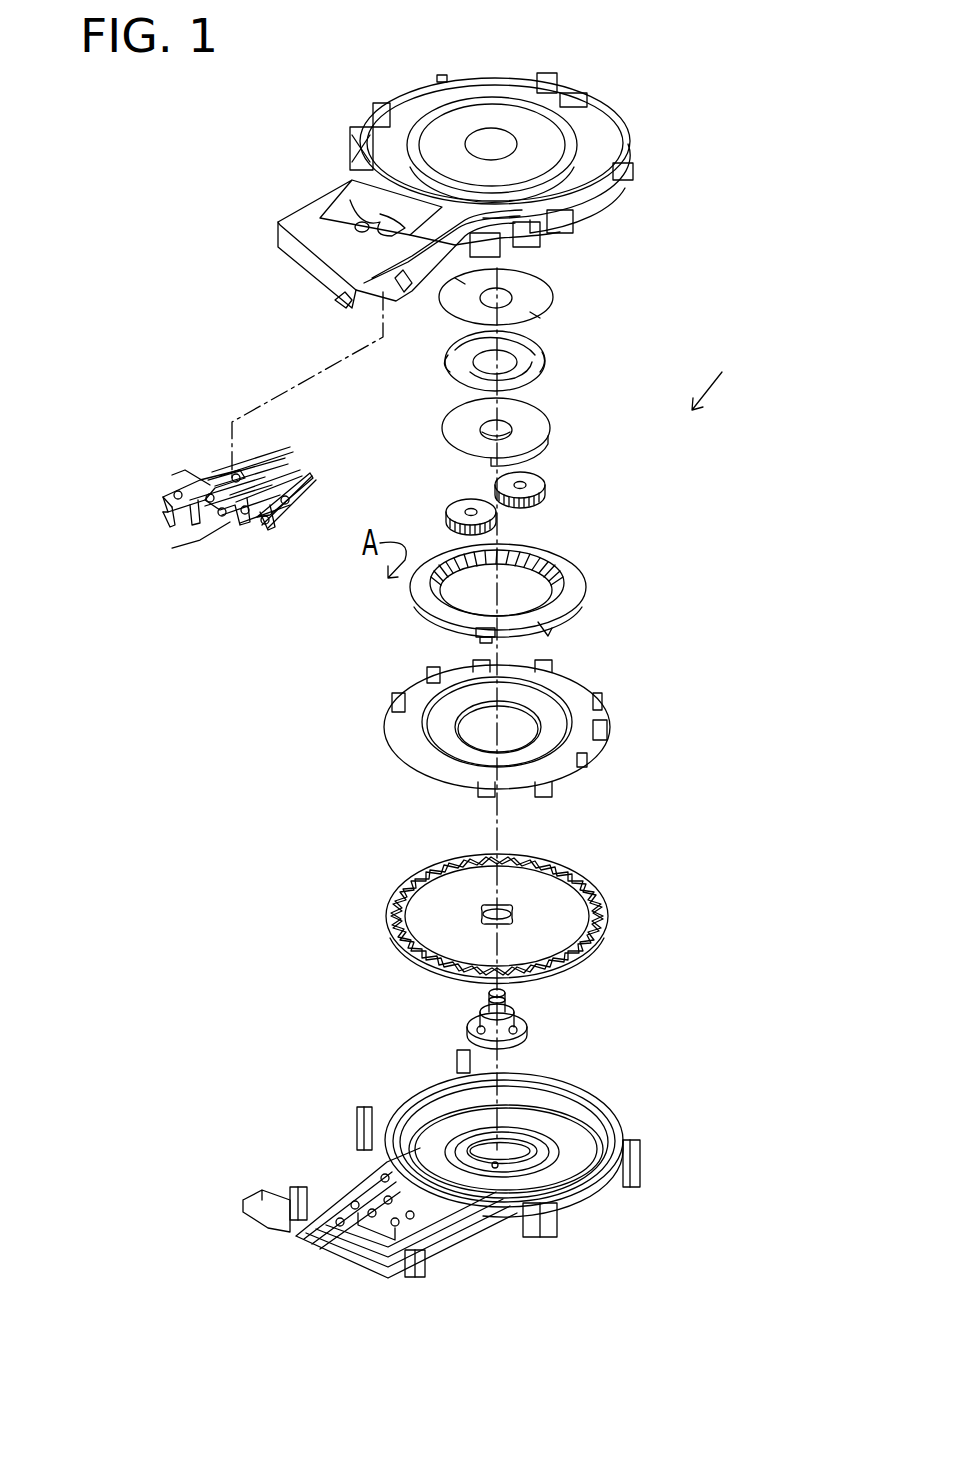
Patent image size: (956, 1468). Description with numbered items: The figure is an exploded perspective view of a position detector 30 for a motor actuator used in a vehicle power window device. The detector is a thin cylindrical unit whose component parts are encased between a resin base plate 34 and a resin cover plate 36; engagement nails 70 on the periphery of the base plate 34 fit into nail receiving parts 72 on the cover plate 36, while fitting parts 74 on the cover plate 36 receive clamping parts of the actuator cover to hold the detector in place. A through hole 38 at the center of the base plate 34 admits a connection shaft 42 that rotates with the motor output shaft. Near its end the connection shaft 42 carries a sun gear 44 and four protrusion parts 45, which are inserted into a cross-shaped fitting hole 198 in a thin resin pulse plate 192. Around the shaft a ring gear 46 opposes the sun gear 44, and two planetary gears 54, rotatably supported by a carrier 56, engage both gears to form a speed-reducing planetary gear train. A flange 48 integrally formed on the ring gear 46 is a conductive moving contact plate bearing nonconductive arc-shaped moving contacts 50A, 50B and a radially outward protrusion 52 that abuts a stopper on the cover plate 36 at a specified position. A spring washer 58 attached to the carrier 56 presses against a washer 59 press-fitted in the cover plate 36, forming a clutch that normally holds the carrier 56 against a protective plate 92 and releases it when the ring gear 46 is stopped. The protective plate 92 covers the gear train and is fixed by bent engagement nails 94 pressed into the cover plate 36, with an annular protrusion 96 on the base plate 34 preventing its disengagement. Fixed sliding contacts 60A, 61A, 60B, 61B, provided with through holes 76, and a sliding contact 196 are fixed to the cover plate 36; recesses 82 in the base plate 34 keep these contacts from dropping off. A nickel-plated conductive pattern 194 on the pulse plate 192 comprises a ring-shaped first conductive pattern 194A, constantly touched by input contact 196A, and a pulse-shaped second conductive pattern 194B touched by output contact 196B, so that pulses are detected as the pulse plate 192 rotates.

The position detector 30 is at (713, 372).
The base plate 34 is at (600, 1093).
The cover plate 36 is at (625, 155).
The through hole 38 is at (495, 1168).
The connection shaft 42 is at (527, 1032).
The sun gear 44 is at (475, 1007).
The protrusion parts 45 is at (507, 1007).
The ring gear 46 is at (550, 573).
The flange 48 is at (577, 592).
The moving contact 50A is at (483, 642).
The moving contact 50B is at (487, 630).
The protrusion 52 is at (543, 632).
The planetary gears 54 is at (448, 507).
The carrier 56 is at (551, 428).
The spring washer 58 is at (546, 361).
The washer 59 is at (553, 296).
The fixed sliding contact 60A is at (273, 452).
The fixed sliding contact 60B is at (240, 460).
The fixed sliding contact 61A is at (290, 473).
The fixed sliding contact 61B is at (313, 472).
The engagement nails 70 is at (453, 1055).
The nail receiving parts 72 is at (600, 110).
The fitting parts 74 is at (556, 85).
The through holes 76 is at (205, 483).
The recesses 82 is at (377, 1178).
The protective plate 92 is at (583, 685).
The engagement nails 94 is at (403, 672).
The protrusion 96 is at (617, 1118).
The pulse plate 192 is at (607, 903).
The conductive pattern 194 is at (400, 916).
The first conductive pattern 194A is at (388, 912).
The second conductive pattern 194B is at (393, 945).
The sliding contact 196 is at (240, 556).
The input contact 196A is at (240, 523).
The output contact 196B is at (283, 507).
The fitting hole 198 is at (520, 915).